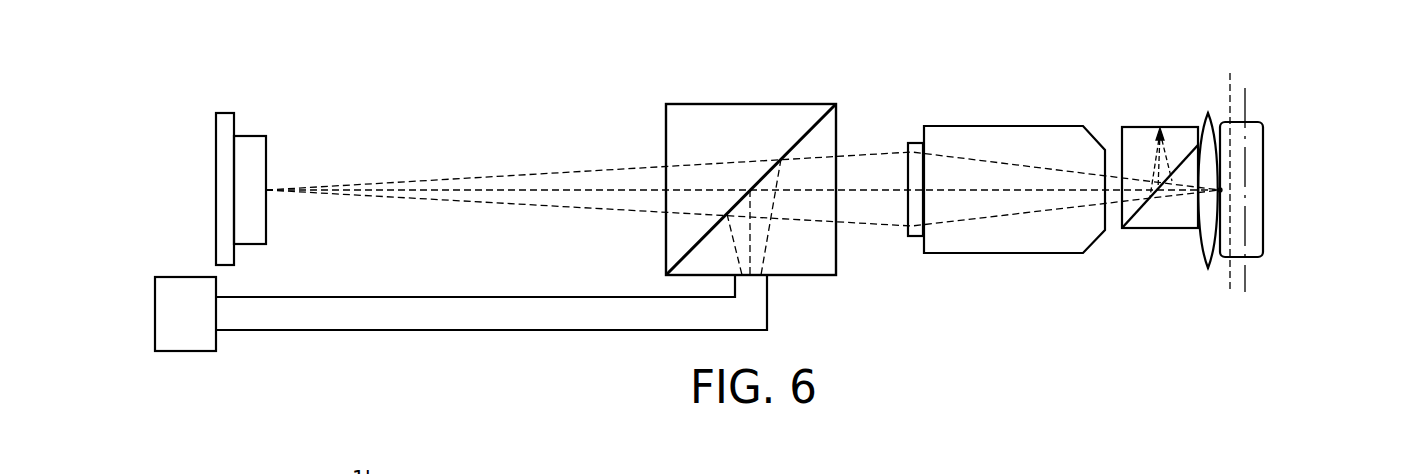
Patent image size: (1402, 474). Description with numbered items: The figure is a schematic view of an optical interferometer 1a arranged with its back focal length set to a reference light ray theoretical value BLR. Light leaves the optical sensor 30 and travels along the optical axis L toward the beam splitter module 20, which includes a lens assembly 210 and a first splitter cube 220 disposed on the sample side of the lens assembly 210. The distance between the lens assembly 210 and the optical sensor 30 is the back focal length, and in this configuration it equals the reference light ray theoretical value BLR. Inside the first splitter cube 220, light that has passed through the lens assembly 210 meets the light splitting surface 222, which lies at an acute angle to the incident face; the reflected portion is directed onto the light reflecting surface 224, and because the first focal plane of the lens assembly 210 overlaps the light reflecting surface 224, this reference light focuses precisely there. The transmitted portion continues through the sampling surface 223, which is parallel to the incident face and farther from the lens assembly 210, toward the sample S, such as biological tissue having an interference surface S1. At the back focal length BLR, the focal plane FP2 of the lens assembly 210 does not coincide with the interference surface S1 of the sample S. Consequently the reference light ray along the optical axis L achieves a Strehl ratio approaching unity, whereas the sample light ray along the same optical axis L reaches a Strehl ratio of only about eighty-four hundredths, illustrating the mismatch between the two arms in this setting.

The optical interferometer 1a is at (378, 33).
The optical sensor 30 is at (248, 125).
The reference light ray theoretical value BLR is at (908, 140).
The optical axis L is at (983, 190).
The beam splitter module 20 is at (919, 95).
The lens assembly 210 is at (1002, 112).
The first splitter cube 220 is at (1110, 112).
The light splitting surface 222 is at (1128, 213).
The sampling surface 223 is at (1196, 200).
The light reflecting surface 224 is at (1141, 126).
The focal plane FP2 is at (1232, 75).
The sample S is at (1252, 272).
The interference surface S1 is at (1246, 213).